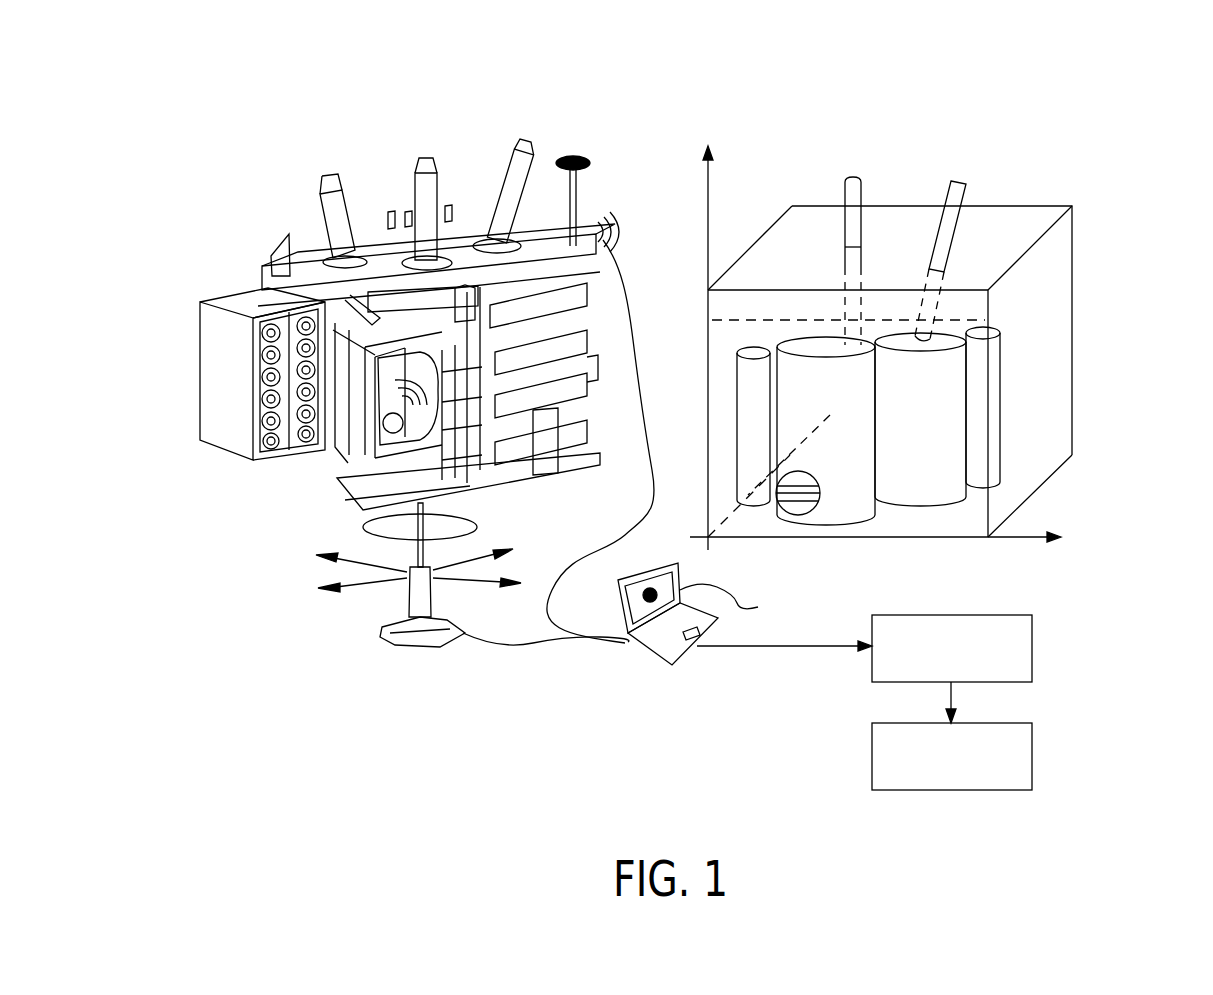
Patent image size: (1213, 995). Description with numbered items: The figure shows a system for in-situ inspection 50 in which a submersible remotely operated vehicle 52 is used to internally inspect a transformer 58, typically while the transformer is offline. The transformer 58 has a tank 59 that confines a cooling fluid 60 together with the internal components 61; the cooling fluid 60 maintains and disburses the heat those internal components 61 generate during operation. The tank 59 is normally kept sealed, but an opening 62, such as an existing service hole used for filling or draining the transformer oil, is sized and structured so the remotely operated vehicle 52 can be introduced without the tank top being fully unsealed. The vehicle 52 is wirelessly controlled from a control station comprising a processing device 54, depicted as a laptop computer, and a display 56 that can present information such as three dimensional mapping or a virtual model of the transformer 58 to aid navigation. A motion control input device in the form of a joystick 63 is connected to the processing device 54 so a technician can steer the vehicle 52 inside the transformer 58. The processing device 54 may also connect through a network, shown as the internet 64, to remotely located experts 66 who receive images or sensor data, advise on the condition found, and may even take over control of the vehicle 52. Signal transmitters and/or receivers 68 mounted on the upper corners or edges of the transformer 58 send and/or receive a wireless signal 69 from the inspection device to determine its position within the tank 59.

The system for in-situ inspection 50 is at (660, 128).
The submersible remotely operated vehicle 52 is at (365, 475).
The processing device 54 is at (640, 657).
The display 56 is at (736, 602).
The transformer 58 is at (240, 452).
The tank 59 is at (385, 261).
The cooling fluid 60 is at (740, 320).
The internal components 61 is at (370, 420).
The opening 62 is at (465, 280).
The joystick 63 is at (382, 637).
The internet 64 is at (918, 615).
The experts 66 is at (1000, 723).
The signal transmitters and/or receivers 68 is at (268, 268).
The wireless signal 69 is at (622, 231).